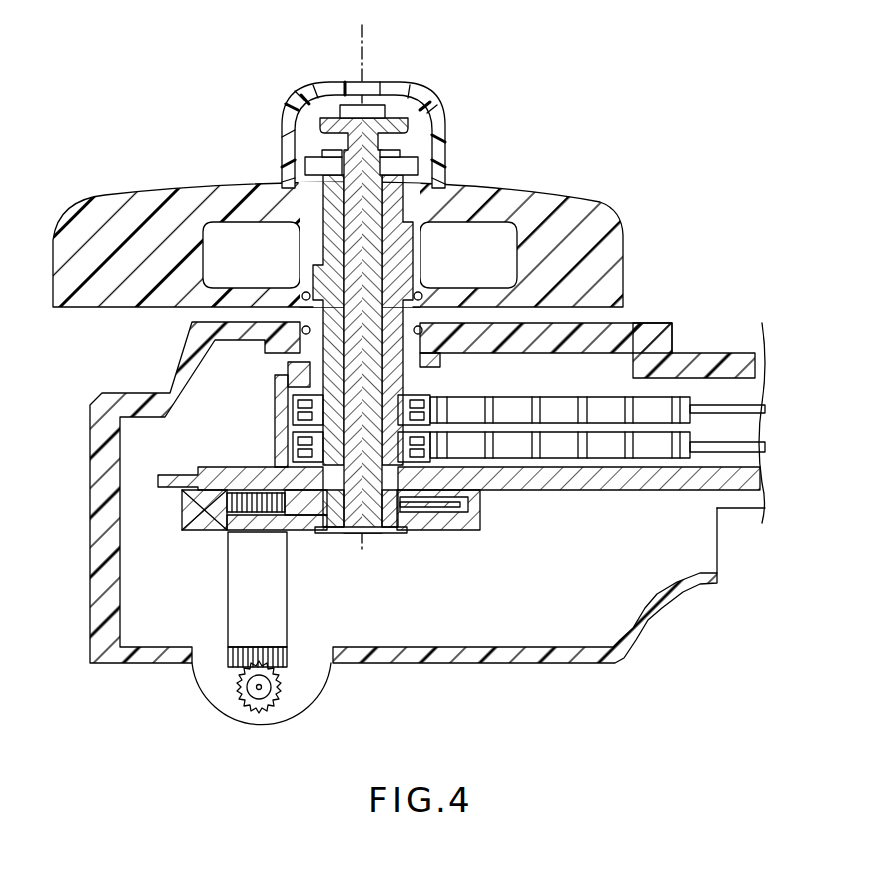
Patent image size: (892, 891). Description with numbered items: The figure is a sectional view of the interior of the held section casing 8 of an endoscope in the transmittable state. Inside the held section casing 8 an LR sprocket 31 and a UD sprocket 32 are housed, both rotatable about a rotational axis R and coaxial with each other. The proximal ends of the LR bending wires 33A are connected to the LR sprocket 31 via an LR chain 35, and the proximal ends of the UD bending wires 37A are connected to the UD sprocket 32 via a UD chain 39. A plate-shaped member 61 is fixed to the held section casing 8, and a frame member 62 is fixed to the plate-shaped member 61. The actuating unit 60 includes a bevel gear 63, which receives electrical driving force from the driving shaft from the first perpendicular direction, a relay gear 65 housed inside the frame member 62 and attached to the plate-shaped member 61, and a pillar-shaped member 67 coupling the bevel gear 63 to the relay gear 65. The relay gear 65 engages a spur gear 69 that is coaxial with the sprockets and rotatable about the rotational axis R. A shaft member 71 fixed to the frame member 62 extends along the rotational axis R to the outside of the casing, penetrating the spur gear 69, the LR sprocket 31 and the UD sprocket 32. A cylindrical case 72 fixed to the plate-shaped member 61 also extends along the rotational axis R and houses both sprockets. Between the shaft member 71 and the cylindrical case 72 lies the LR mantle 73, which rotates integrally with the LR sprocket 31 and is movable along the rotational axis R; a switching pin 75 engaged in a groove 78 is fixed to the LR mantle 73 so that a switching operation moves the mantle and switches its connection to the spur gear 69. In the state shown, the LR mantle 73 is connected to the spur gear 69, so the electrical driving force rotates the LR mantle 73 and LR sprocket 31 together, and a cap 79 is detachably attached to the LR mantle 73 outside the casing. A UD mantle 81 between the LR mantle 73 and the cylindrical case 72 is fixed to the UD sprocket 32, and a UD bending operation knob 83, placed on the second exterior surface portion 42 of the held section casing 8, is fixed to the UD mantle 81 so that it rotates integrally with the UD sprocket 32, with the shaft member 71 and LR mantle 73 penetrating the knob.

The rotational axis R is at (366, 47).
The held section casing 8 is at (655, 345).
The second exterior surface portion 42 is at (633, 323).
The UD bending operation knob 83 is at (608, 224).
The cap 79 is at (432, 100).
The groove 78 is at (322, 165).
The switching pin 75 is at (438, 160).
The LR mantle 73 is at (400, 240).
The UD mantle 81 is at (395, 278).
The shaft member 71 is at (370, 537).
The cylindrical case 72 is at (275, 408).
The UD sprocket 32 is at (407, 397).
The LR sprocket 31 is at (398, 440).
The UD chain 39 is at (552, 405).
The LR chain 35 is at (557, 455).
The UD bending wire 37A is at (700, 412).
The LR bending wire 33A is at (706, 452).
The plate-shaped member 61 is at (527, 482).
The frame member 62 is at (470, 530).
The spur gear 69 is at (423, 505).
The relay gear 65 is at (228, 503).
The actuating unit 60 is at (266, 622).
The pillar-shaped member 67 is at (230, 575).
The bevel gear 63 is at (290, 657).